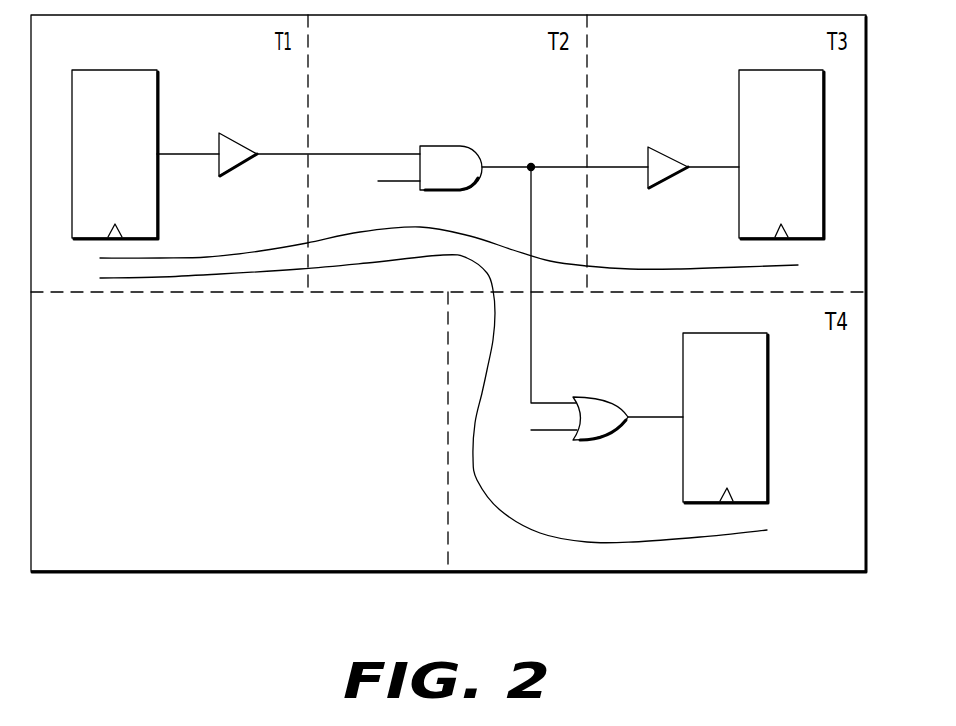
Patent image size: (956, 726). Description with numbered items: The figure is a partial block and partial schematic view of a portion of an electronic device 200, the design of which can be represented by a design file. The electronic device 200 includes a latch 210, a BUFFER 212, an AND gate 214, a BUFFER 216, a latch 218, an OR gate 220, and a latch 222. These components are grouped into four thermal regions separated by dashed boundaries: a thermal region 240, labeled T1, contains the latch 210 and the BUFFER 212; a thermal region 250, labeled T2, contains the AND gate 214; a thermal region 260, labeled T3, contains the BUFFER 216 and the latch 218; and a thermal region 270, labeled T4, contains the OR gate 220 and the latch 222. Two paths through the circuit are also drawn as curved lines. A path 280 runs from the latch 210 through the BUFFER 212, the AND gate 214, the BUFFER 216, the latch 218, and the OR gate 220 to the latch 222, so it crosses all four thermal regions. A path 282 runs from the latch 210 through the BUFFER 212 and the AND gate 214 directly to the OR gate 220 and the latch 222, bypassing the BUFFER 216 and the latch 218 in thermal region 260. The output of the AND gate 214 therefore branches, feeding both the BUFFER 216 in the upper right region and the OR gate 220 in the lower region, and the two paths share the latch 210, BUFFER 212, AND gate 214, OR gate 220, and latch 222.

The electronic device 200 is at (285, 639).
The latch 210 is at (132, 196).
The BUFFER 212 is at (233, 136).
The AND gate 214 is at (438, 145).
The BUFFER 216 is at (682, 141).
The latch 218 is at (798, 196).
The OR gate 220 is at (590, 397).
The latch 222 is at (743, 460).
The thermal region 240 is at (103, 56).
The thermal region 250 is at (382, 55).
The thermal region 260 is at (662, 55).
The thermal region 270 is at (827, 542).
The path 280 is at (248, 251).
The path 282 is at (192, 280).